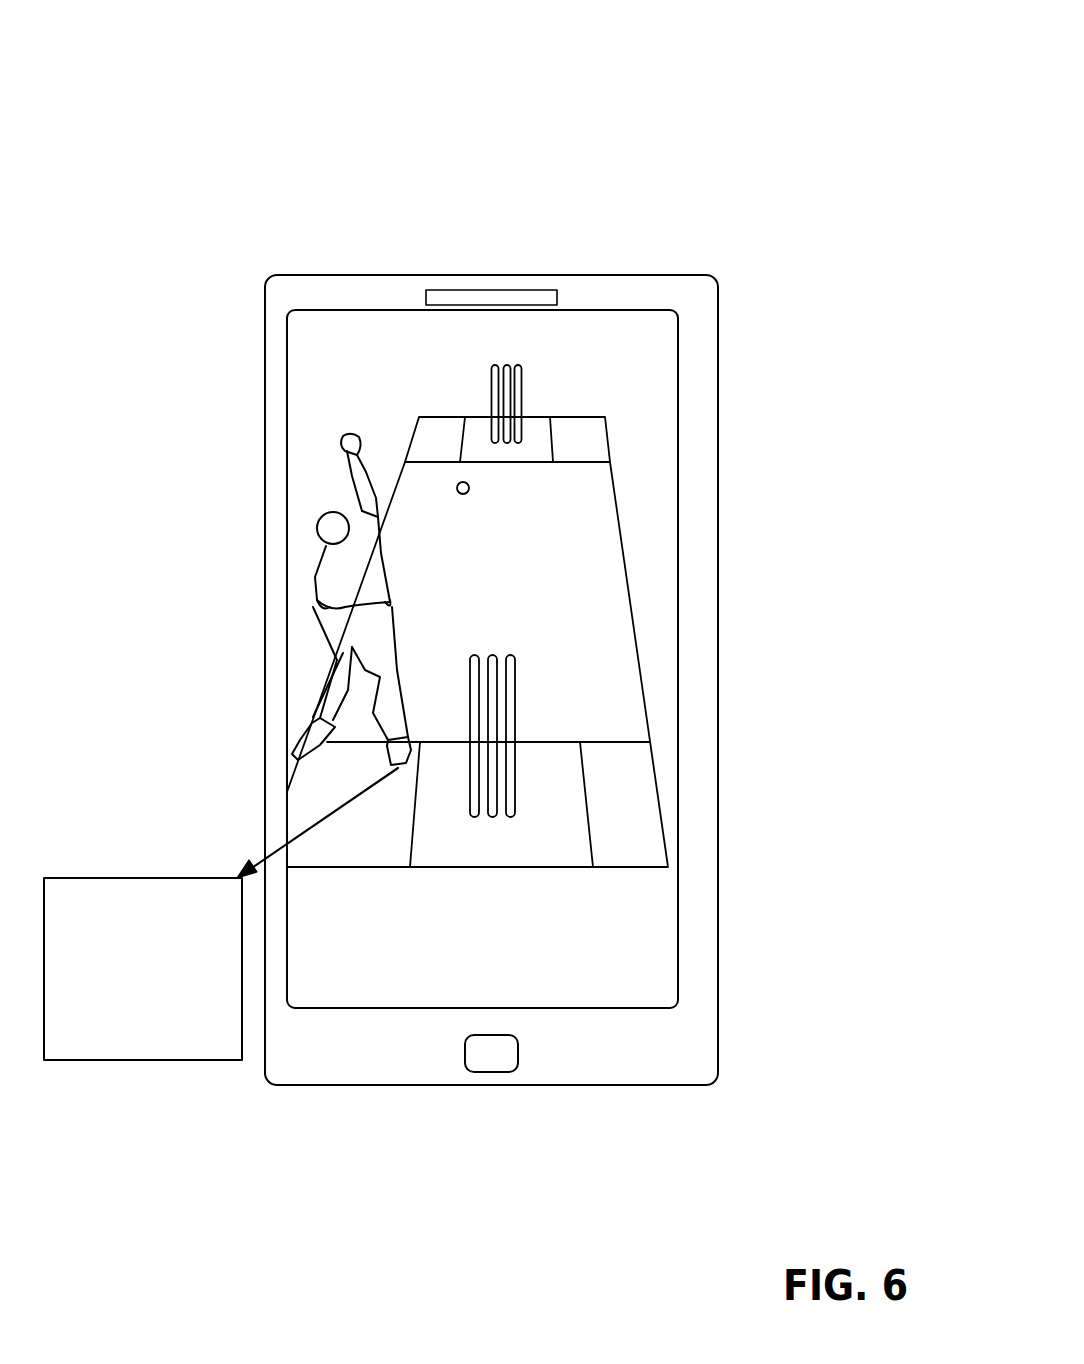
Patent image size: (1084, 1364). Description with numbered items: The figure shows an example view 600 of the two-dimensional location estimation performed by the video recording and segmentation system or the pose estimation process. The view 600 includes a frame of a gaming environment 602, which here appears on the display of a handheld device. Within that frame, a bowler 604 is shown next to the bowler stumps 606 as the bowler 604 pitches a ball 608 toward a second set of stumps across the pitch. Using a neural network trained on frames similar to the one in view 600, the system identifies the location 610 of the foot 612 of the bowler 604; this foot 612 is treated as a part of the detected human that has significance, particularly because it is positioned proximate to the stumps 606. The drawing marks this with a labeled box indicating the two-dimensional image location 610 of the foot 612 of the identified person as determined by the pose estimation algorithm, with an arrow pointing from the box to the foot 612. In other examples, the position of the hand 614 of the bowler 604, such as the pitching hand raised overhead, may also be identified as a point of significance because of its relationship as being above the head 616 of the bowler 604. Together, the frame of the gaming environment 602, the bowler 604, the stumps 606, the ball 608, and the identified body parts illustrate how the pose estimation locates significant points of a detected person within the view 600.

The view 600 is at (908, 116).
The gaming environment 602 is at (690, 1003).
The bowler 604 is at (313, 590).
The bowler stumps 606 is at (527, 667).
The ball 608 is at (469, 491).
The location of the foot 610 is at (118, 1060).
The foot 612 is at (409, 760).
The hand 614 is at (343, 438).
The head 616 is at (318, 520).